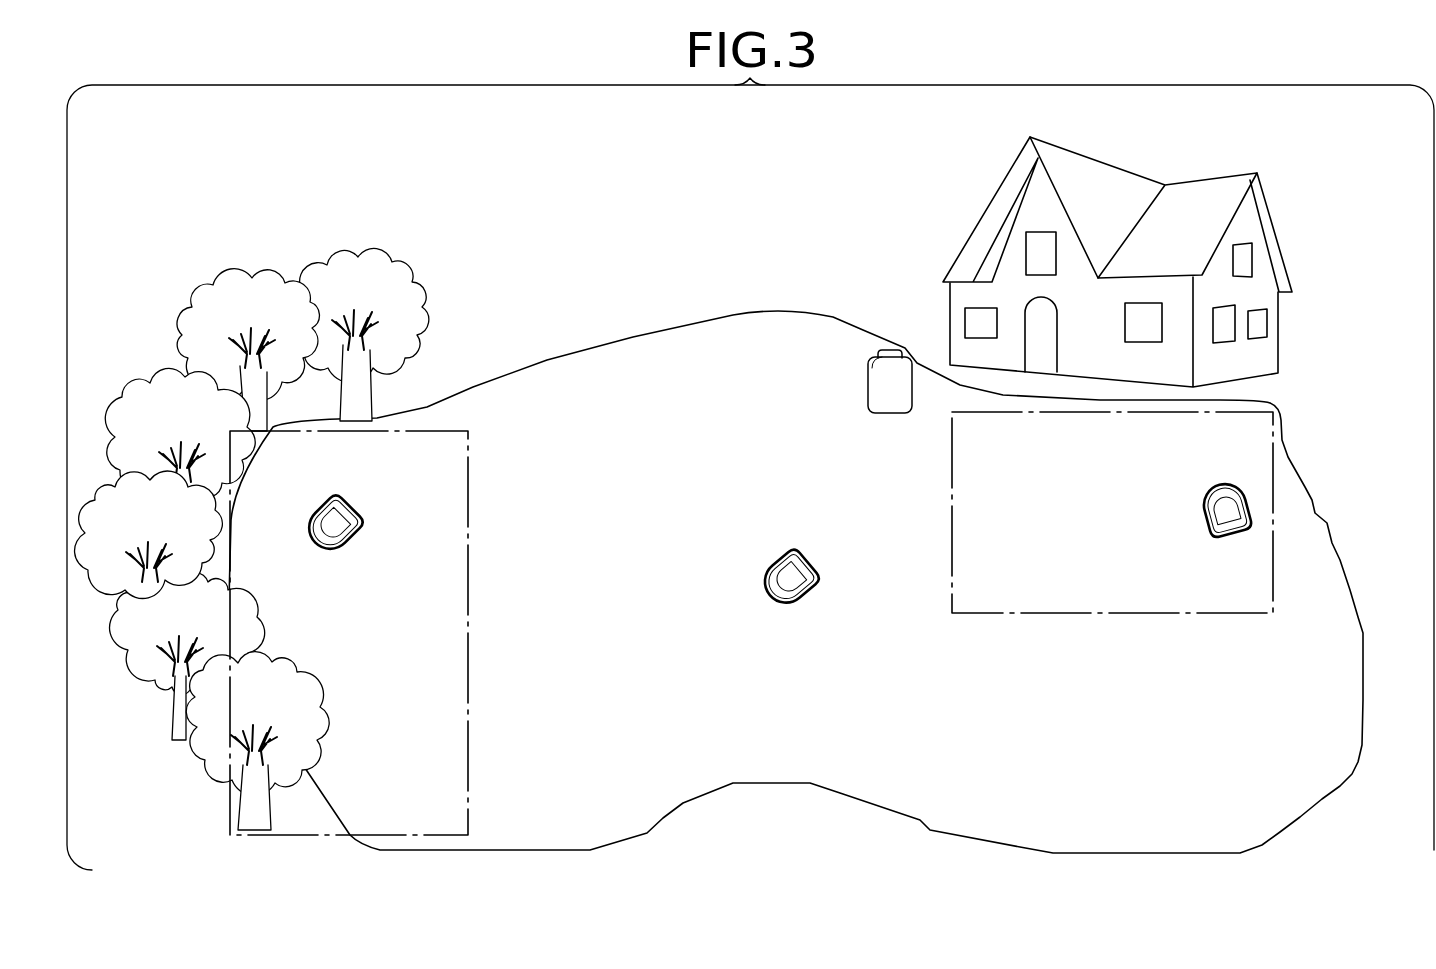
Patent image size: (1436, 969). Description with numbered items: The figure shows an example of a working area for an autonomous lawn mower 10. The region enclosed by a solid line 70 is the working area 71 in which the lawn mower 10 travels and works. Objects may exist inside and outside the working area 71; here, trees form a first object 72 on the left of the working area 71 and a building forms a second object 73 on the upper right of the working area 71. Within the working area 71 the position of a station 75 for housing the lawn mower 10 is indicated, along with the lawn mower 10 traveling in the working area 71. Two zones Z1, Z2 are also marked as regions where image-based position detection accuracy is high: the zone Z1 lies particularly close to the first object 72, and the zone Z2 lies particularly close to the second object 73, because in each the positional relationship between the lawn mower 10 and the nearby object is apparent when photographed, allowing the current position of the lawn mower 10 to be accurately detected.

The lawn mower 10 is at (358, 527).
The solid line 70 is at (547, 360).
The working area 71 is at (665, 474).
The first object 72 is at (205, 283).
The second object 73 is at (1278, 190).
The station 75 is at (867, 402).
The zone Z1 is at (469, 532).
The zone Z2 is at (1200, 615).